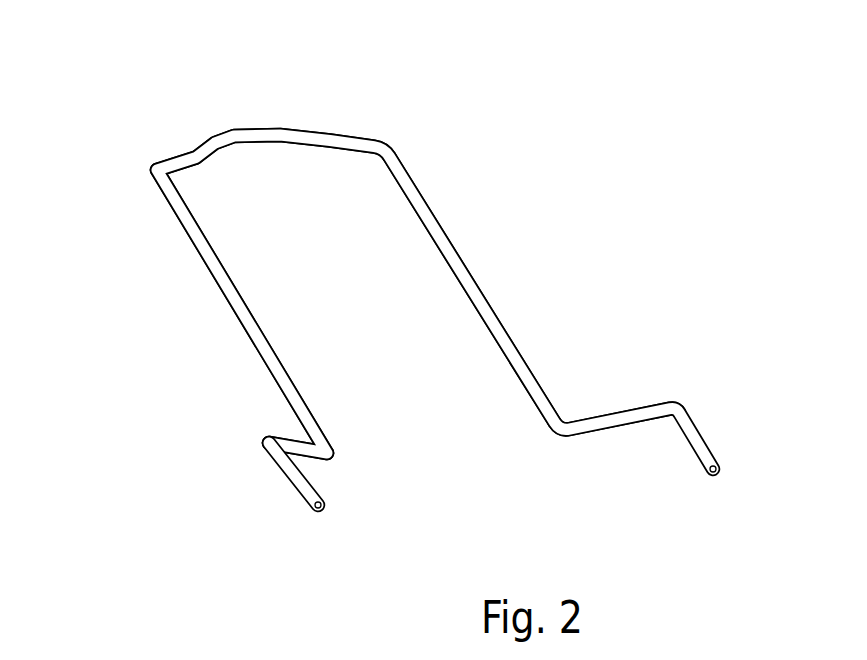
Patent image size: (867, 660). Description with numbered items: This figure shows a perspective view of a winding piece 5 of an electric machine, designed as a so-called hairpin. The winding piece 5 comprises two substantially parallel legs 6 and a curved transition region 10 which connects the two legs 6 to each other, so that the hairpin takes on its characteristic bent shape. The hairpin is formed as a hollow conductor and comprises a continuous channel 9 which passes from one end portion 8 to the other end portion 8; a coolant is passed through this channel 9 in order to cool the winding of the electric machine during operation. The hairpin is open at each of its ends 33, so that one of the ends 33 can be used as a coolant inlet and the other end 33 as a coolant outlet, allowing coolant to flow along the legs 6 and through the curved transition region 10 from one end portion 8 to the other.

The winding piece 5 is at (206, 264).
The legs 6 is at (166, 199).
The end portion 8 is at (634, 406).
The continuous channel 9 is at (316, 510).
The curved transition region 10 is at (228, 130).
The ends 33 is at (721, 471).